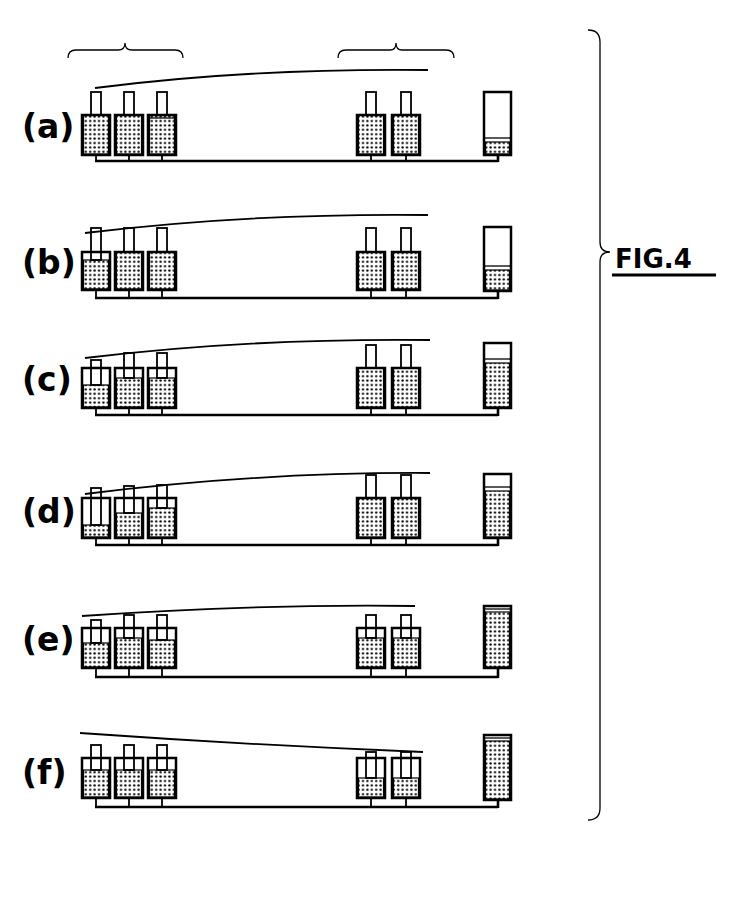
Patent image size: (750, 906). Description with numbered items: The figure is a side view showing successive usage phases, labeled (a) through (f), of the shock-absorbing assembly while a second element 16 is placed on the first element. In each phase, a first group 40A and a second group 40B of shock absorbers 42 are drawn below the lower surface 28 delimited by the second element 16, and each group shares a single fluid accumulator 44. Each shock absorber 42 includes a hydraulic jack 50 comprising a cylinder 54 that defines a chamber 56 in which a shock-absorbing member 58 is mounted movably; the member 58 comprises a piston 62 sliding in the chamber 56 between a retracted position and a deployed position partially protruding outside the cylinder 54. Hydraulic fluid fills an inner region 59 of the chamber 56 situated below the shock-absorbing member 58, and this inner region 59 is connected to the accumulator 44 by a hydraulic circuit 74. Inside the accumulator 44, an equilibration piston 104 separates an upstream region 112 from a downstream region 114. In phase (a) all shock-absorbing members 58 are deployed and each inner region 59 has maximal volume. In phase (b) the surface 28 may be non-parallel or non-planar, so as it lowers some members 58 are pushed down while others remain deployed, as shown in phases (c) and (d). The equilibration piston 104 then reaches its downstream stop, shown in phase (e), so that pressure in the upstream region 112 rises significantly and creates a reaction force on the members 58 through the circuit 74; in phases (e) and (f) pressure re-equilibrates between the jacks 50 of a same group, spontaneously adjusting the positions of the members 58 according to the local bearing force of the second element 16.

The second element 16 is at (268, 62).
The lower surface 28 is at (265, 73).
The group of shock absorbers 40A is at (162, 107).
The group of shock absorbers 40B is at (396, 410).
The shock absorber 42 is at (100, 226).
The fluid accumulator 44 is at (509, 442).
The hydraulic jack 50 is at (192, 127).
The cylinder 54 is at (177, 146).
The chamber 56 is at (156, 132).
The shock-absorbing member 58 is at (167, 104).
The inner region 59 is at (158, 150).
The piston 62 is at (158, 128).
The hydraulic circuit 74 is at (338, 164).
The equilibration piston 104 is at (499, 136).
The upstream region 112 is at (502, 157).
The downstream region 114 is at (492, 117).